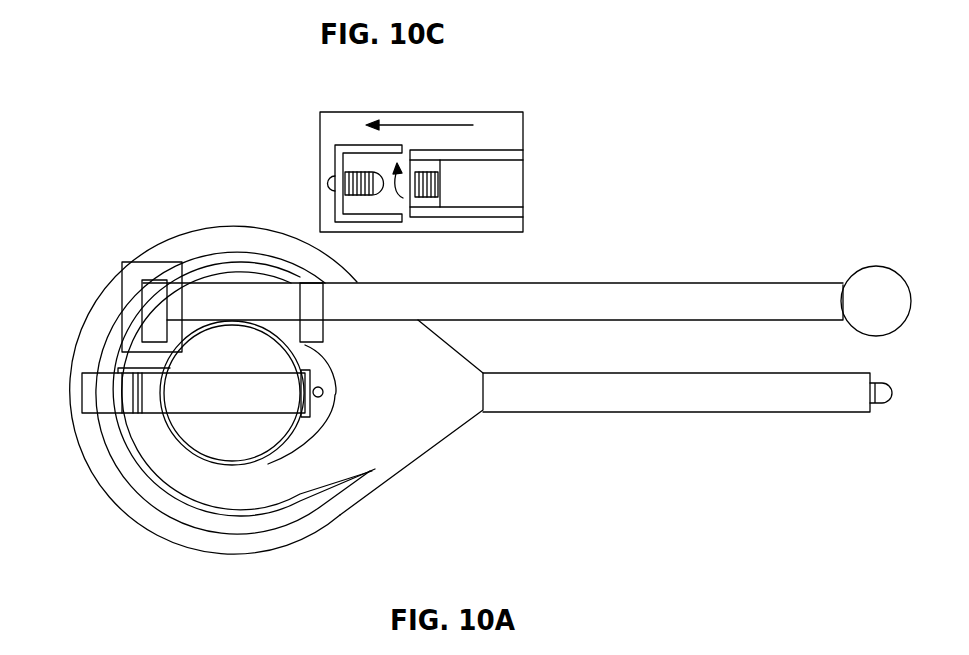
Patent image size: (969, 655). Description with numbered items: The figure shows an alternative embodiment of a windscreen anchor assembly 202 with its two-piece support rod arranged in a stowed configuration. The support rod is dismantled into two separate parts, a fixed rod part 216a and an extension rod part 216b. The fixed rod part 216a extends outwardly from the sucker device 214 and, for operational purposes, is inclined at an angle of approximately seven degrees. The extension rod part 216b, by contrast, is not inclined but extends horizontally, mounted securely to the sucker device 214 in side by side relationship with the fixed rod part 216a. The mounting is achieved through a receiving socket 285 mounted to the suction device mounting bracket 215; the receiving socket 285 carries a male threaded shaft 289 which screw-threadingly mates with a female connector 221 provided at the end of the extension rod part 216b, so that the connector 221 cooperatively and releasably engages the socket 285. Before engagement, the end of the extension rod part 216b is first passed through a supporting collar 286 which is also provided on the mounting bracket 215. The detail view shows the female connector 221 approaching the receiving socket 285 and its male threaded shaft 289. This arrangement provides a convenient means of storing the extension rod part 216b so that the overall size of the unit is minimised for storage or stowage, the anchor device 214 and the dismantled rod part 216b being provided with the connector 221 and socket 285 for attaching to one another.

In FIG. 10C, the windscreen anchor assembly 202 is at (446, 148).
In FIG. 10A, the sucker device 214 is at (343, 497).
In FIG. 10A, the suction device mounting bracket 215 is at (113, 367).
In FIG. 10A, the fixed rod part 216a is at (631, 414).
In FIG. 10C, the extension rod part 216b is at (485, 156).
In FIG. 10A, the extension rod part 216b is at (631, 282).
In FIG. 10C, the female connector 221 is at (423, 167).
In FIG. 10C, the receiving socket 285 is at (340, 150).
In FIG. 10A, the receiving socket 285 is at (157, 308).
In FIG. 10A, the supporting collar 286 is at (312, 300).
In FIG. 10C, the male threaded shaft 289 is at (346, 182).